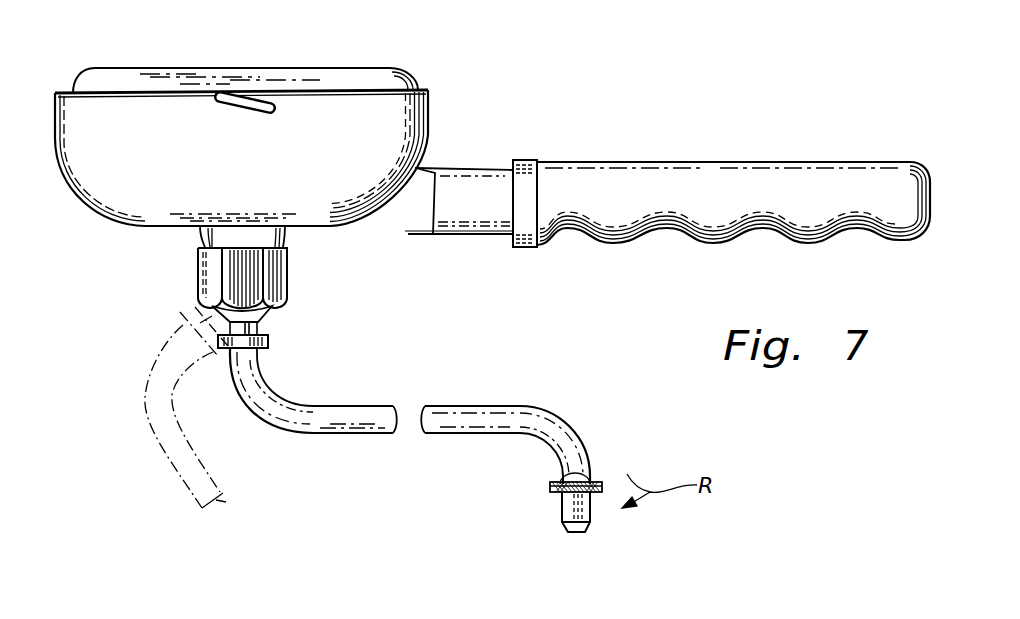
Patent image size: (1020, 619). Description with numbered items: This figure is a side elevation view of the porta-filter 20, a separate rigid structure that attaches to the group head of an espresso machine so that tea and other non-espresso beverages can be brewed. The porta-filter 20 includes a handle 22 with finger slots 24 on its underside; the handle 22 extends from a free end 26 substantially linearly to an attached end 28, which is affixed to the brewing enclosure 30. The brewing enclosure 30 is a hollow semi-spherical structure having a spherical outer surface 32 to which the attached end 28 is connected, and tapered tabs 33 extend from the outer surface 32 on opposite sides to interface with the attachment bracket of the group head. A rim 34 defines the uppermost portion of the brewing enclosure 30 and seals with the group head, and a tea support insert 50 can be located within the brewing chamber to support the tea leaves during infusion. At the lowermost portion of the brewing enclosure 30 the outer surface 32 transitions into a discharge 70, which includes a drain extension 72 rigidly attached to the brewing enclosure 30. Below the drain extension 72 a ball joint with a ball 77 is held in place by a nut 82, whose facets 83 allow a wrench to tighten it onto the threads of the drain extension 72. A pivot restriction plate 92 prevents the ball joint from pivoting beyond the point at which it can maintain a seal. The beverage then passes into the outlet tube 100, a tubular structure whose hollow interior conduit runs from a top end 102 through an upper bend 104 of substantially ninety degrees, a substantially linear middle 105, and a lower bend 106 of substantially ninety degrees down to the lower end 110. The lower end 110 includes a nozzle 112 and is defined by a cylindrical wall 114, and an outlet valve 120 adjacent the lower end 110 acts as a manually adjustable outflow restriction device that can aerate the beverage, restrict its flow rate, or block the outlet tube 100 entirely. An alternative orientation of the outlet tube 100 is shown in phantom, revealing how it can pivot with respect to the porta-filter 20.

The porta-filter 20 is at (657, 364).
The handle 22 is at (617, 160).
The finger slots 24 is at (763, 232).
The free end 26 is at (933, 187).
The attached end 28 is at (415, 236).
The brewing enclosure 30 is at (417, 117).
The spherical outer surface 32 is at (241, 158).
The tapered tabs 33 is at (257, 104).
The rim 34 is at (57, 92).
The tea support insert 50 is at (375, 76).
The discharge 70 is at (148, 256).
The drain extension 72 is at (286, 236).
The ball 77 is at (272, 322).
The nut 82 is at (287, 284).
The facets 83 is at (208, 272).
The pivot restriction plate 92 is at (268, 345).
The outlet tube 100 is at (468, 412).
The top end 102 is at (258, 358).
The upper bend 104 is at (272, 415).
The linear middle 105 is at (377, 432).
The lower bend 106 is at (543, 425).
The lower end 110 is at (590, 513).
The nozzle 112 is at (585, 533).
The cylindrical wall 114 is at (560, 497).
The outlet valve 120 is at (573, 460).